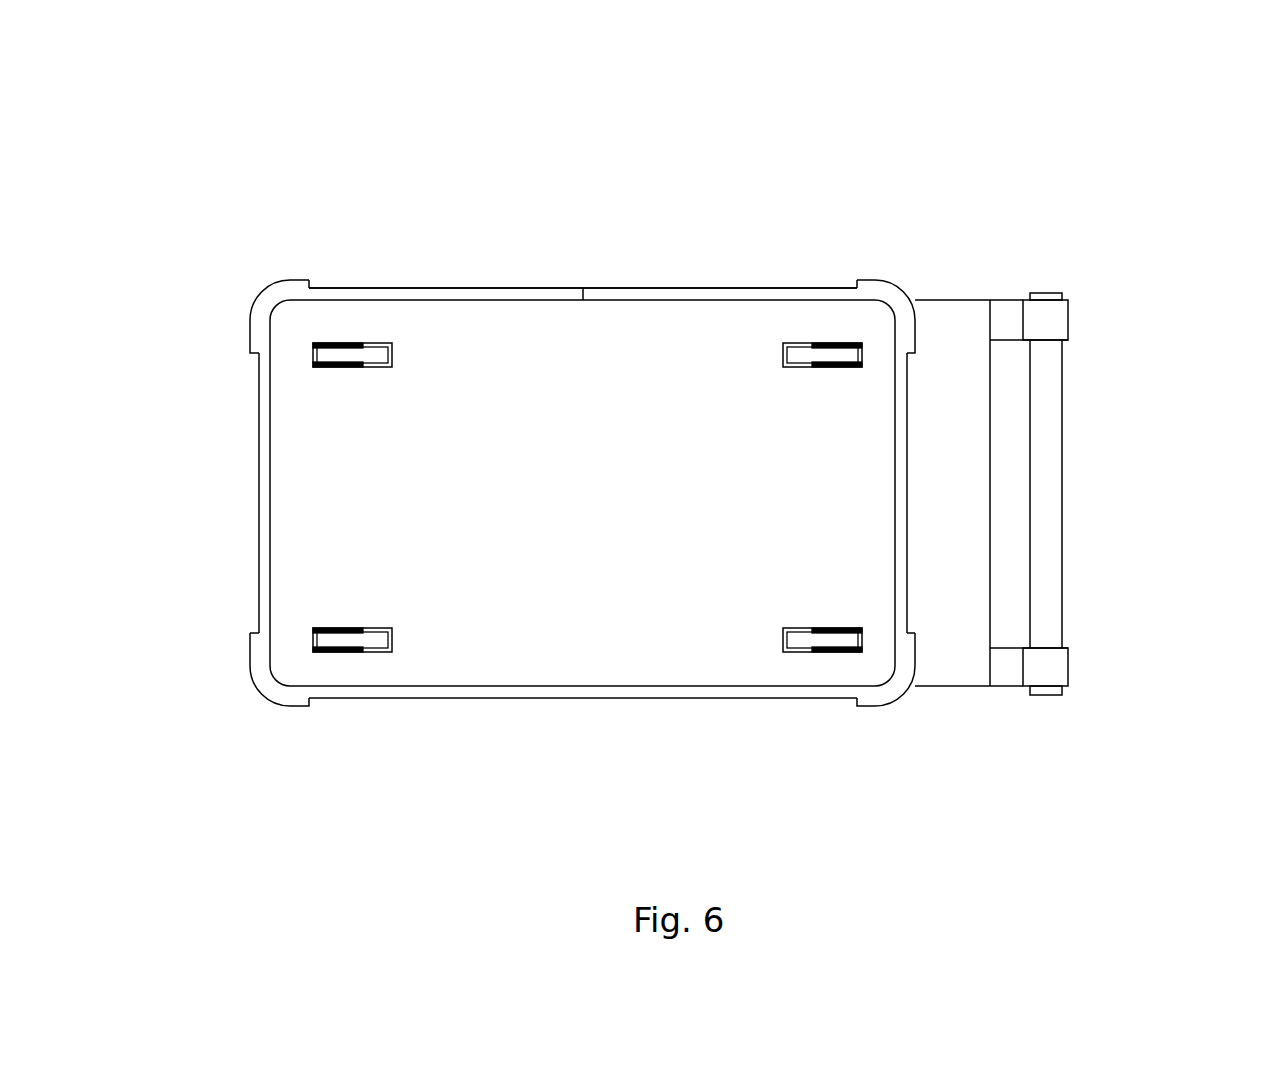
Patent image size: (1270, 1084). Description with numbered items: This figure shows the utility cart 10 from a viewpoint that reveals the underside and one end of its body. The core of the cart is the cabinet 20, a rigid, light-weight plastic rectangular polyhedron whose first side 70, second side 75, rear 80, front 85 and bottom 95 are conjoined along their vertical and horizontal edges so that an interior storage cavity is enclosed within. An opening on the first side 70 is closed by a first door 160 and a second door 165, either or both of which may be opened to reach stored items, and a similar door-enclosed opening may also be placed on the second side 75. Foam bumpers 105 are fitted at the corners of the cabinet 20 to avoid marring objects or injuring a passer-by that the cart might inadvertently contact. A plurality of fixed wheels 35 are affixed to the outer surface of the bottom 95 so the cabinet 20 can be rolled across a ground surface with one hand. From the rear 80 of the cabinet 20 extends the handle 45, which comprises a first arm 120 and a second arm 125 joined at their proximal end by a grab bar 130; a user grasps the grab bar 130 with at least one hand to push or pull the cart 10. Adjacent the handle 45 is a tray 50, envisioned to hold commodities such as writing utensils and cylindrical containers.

The utility cart 10 is at (1168, 108).
The cabinet 20 is at (465, 268).
The fixed wheels 35 is at (370, 345).
The handle 45 is at (1108, 540).
The tray 50 is at (968, 330).
The first side 70 is at (605, 248).
The second side 75 is at (488, 698).
The rear 80 is at (905, 473).
The front 85 is at (258, 455).
The bottom 95 is at (338, 538).
The foam bumpers 105 is at (268, 288).
The first arm 120 is at (1062, 670).
The second arm 125 is at (1042, 313).
The grab bar 130 is at (1057, 510).
The first door 160 is at (675, 288).
The second door 165 is at (405, 288).